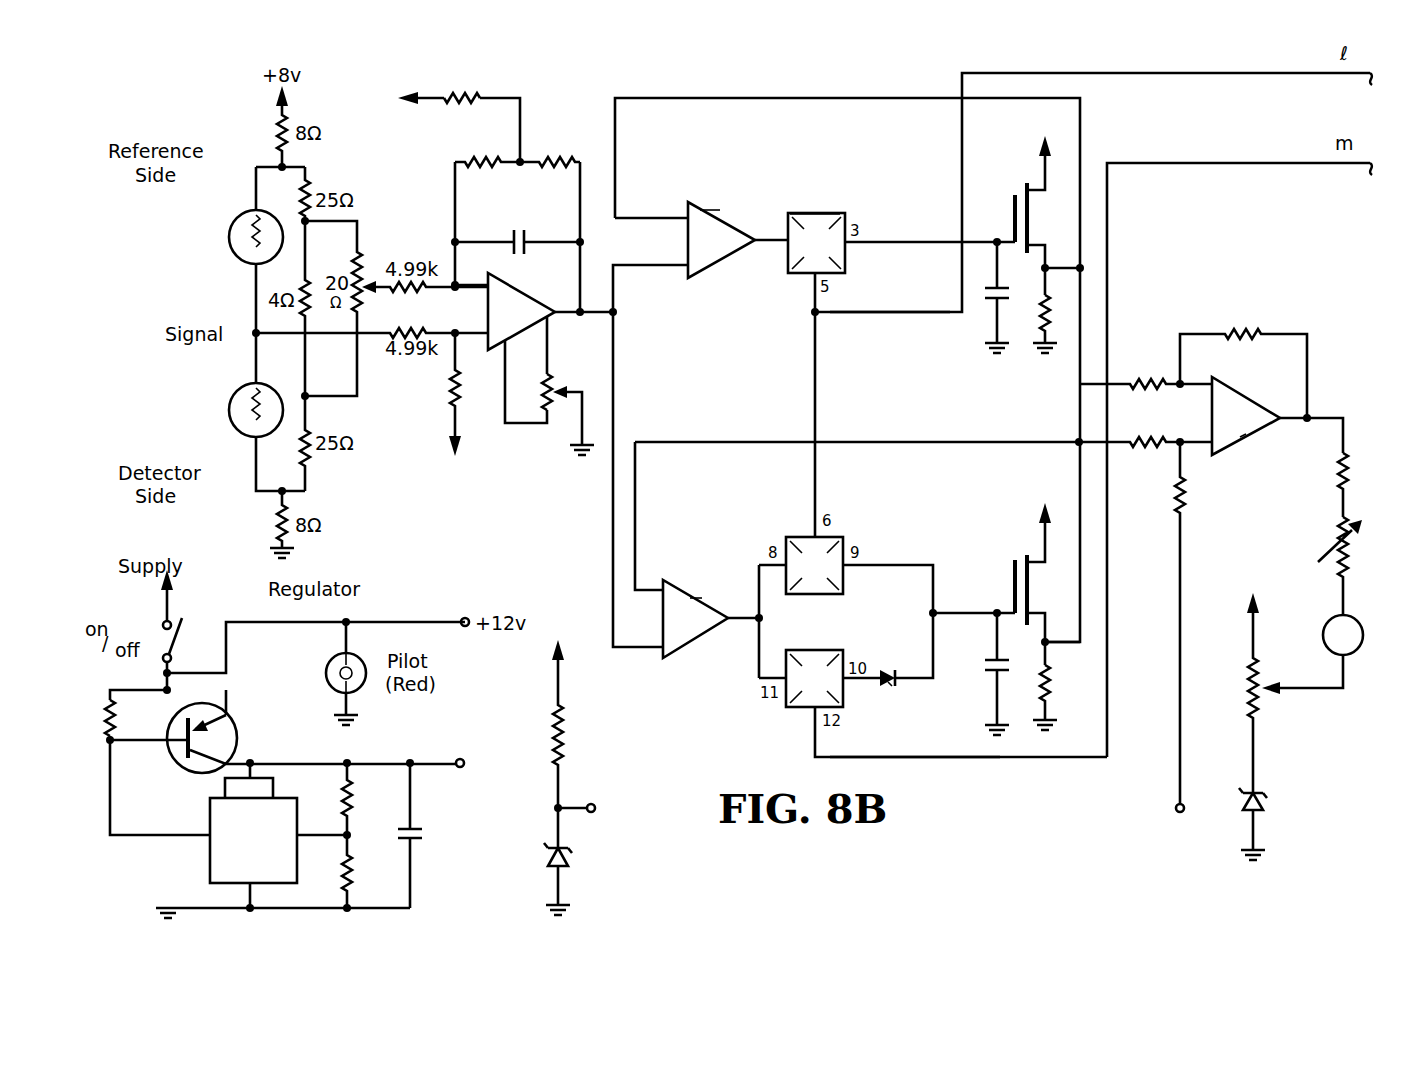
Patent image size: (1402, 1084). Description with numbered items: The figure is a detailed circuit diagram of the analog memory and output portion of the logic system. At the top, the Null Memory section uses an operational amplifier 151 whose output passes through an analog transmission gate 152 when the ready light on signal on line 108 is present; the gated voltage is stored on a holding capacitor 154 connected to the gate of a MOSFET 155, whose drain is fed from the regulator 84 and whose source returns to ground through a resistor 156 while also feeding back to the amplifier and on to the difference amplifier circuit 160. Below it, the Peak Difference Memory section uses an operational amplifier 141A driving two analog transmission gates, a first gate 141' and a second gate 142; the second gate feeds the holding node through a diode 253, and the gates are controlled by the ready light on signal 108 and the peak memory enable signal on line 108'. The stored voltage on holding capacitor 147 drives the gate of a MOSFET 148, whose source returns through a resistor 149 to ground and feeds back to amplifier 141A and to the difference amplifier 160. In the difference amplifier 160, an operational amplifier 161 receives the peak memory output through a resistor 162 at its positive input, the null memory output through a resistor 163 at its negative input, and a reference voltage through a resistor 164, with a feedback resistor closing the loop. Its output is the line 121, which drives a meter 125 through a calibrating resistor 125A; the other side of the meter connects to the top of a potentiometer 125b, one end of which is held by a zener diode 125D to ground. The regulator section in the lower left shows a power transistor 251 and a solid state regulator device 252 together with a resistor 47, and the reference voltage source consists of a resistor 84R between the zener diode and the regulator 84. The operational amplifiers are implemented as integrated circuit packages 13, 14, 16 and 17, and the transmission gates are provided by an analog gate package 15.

The operational amplifier integrated circuit 13 is at (846, 370).
The operational amplifier integrated circuit 14 is at (480, 279).
The analog transmission gate integrated circuit 15 is at (815, 460).
The operational amplifier integrated circuit 16 is at (846, 495).
The operational amplifier integrated circuit 17 is at (1269, 411).
The operational amplifier 151 is at (712, 210).
The analog transmission gate 152 is at (814, 212).
The MOSFET 155 is at (1029, 218).
The holding capacitor 154 is at (987, 310).
The resistor 156 is at (1038, 334).
The ready light on signal line 108 is at (890, 334).
The difference amplifier circuit 160 is at (1245, 332).
The resistor 163 is at (1145, 378).
The resistor 162 is at (1168, 442).
The operational amplifier 161 is at (1245, 440).
The resistor 164 is at (1174, 508).
The output line 121 is at (1343, 478).
The calibrating resistor 125A is at (1330, 529).
The meter 125 is at (1356, 614).
The potentiometer 125b is at (1262, 700).
The zener diode 125D is at (1265, 797).
The operational amplifier 141A is at (697, 597).
The analog transmission gate 141' is at (861, 516).
The analog transmission gate 142 is at (820, 650).
The diode 253 is at (891, 688).
The peak memory enable signal line 108' is at (915, 741).
The MOSFET 148 is at (1032, 606).
The holding capacitor 147 is at (985, 660).
The resistor 149 is at (1046, 690).
The resistor 47 is at (96, 722).
The transistor 251 is at (237, 742).
The solid state device 252 is at (318, 840).
The resistor 84R is at (576, 754).
The regulator 84 is at (581, 862).